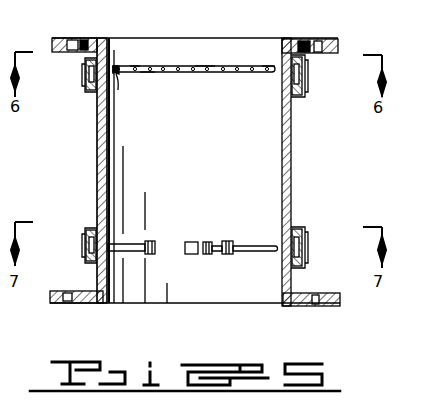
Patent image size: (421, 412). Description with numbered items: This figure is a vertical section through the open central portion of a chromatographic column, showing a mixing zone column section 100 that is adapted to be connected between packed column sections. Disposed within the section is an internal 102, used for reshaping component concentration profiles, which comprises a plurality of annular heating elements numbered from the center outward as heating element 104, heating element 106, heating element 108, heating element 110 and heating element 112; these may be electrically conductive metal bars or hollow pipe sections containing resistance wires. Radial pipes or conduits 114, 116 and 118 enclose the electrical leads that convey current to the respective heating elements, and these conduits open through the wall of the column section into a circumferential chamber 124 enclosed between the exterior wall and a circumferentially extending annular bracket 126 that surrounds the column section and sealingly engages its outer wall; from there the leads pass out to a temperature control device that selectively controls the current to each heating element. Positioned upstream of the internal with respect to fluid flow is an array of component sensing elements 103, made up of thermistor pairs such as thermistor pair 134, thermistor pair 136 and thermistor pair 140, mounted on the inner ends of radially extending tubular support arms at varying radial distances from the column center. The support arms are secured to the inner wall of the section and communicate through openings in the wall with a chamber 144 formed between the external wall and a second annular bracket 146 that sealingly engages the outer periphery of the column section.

The mixing zone column section 100 is at (100, 104).
The internal 102 is at (257, 99).
The array of component sensing elements 103 is at (212, 258).
The annular heating element 104 is at (178, 64).
The annular heating element 106 is at (163, 73).
The annular heating element 108 is at (147, 74).
The annular heating element 110 is at (135, 65).
The annular heating element 112 is at (118, 72).
The radial pipe or conduit 114 is at (268, 75).
The radial pipe or conduit 116 is at (197, 72).
The radial pipe or conduit 118 is at (110, 125).
The circumferential chamber 124 is at (303, 78).
The annular bracket 126 is at (84, 71).
The thermistor pair 134 is at (192, 256).
The thermistor pair 136 is at (155, 247).
The thermistor pair 140 is at (127, 252).
The chamber 144 is at (305, 235).
The annular bracket 146 is at (305, 262).